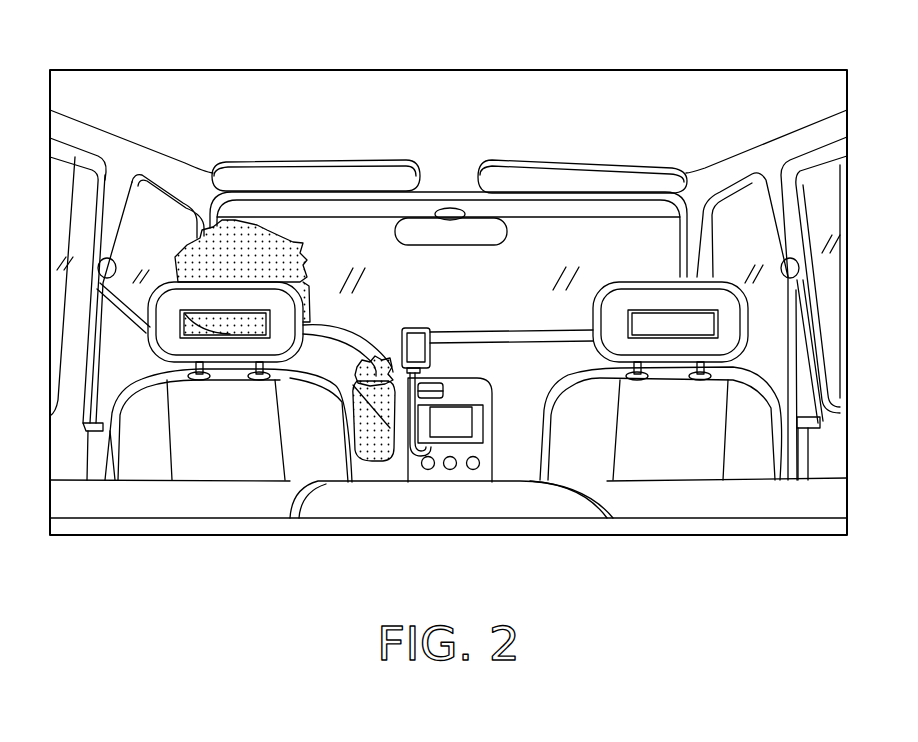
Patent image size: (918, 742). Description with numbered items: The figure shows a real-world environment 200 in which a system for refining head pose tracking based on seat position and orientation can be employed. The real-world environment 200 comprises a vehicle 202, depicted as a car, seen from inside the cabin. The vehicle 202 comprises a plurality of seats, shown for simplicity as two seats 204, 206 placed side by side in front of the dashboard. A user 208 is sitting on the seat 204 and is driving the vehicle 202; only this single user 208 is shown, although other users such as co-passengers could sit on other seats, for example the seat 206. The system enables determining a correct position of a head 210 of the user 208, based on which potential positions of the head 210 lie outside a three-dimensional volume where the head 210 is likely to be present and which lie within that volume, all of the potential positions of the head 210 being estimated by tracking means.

The real-world environment 200 is at (116, 56).
The vehicle 202 is at (705, 105).
The seat 204 is at (209, 462).
The seat 206 is at (666, 462).
The user 208 is at (373, 463).
The head 210 is at (307, 253).